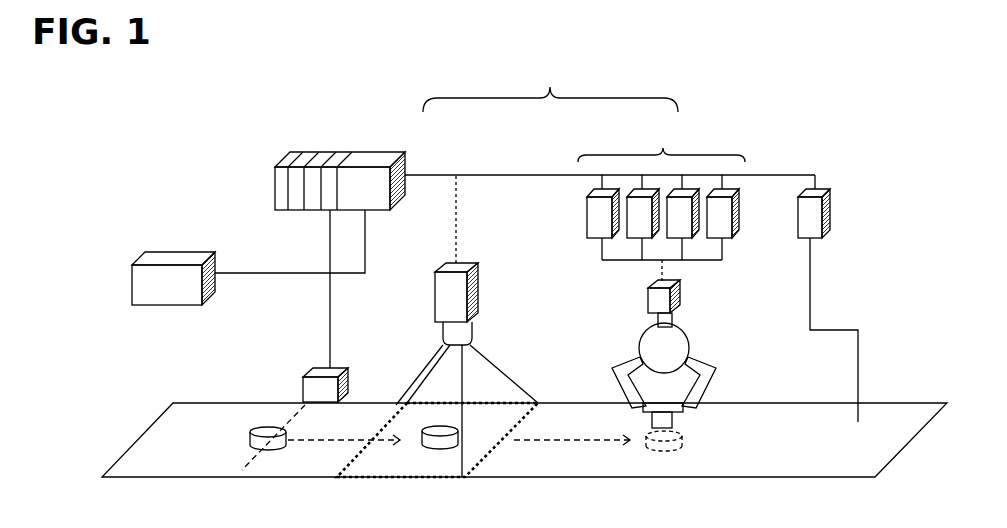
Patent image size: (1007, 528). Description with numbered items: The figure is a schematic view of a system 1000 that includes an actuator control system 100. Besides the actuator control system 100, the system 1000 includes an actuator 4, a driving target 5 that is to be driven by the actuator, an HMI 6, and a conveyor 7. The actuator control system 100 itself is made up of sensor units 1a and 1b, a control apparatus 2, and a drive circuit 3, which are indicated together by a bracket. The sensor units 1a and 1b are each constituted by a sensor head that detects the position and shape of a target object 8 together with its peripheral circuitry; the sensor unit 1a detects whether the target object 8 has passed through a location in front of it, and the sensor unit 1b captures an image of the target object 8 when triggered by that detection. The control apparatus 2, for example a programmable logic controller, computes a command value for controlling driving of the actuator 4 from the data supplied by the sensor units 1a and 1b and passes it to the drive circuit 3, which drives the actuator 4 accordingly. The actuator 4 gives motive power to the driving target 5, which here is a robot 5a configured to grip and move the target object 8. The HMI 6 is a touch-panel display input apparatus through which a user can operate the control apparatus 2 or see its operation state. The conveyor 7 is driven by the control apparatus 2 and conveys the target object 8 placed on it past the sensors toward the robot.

The system 1000 is at (780, 139).
The actuator control system 100 is at (550, 86).
The sensor unit 1a is at (341, 368).
The sensor unit 1b is at (478, 292).
The control apparatus 2 is at (406, 162).
The drive circuit 3 is at (661, 201).
The actuator 4 is at (648, 296).
The driving target 5 is at (680, 382).
The robot 5a is at (688, 345).
The HMI 6 is at (170, 255).
The conveyor 7 is at (888, 403).
The target object 8 is at (250, 434).